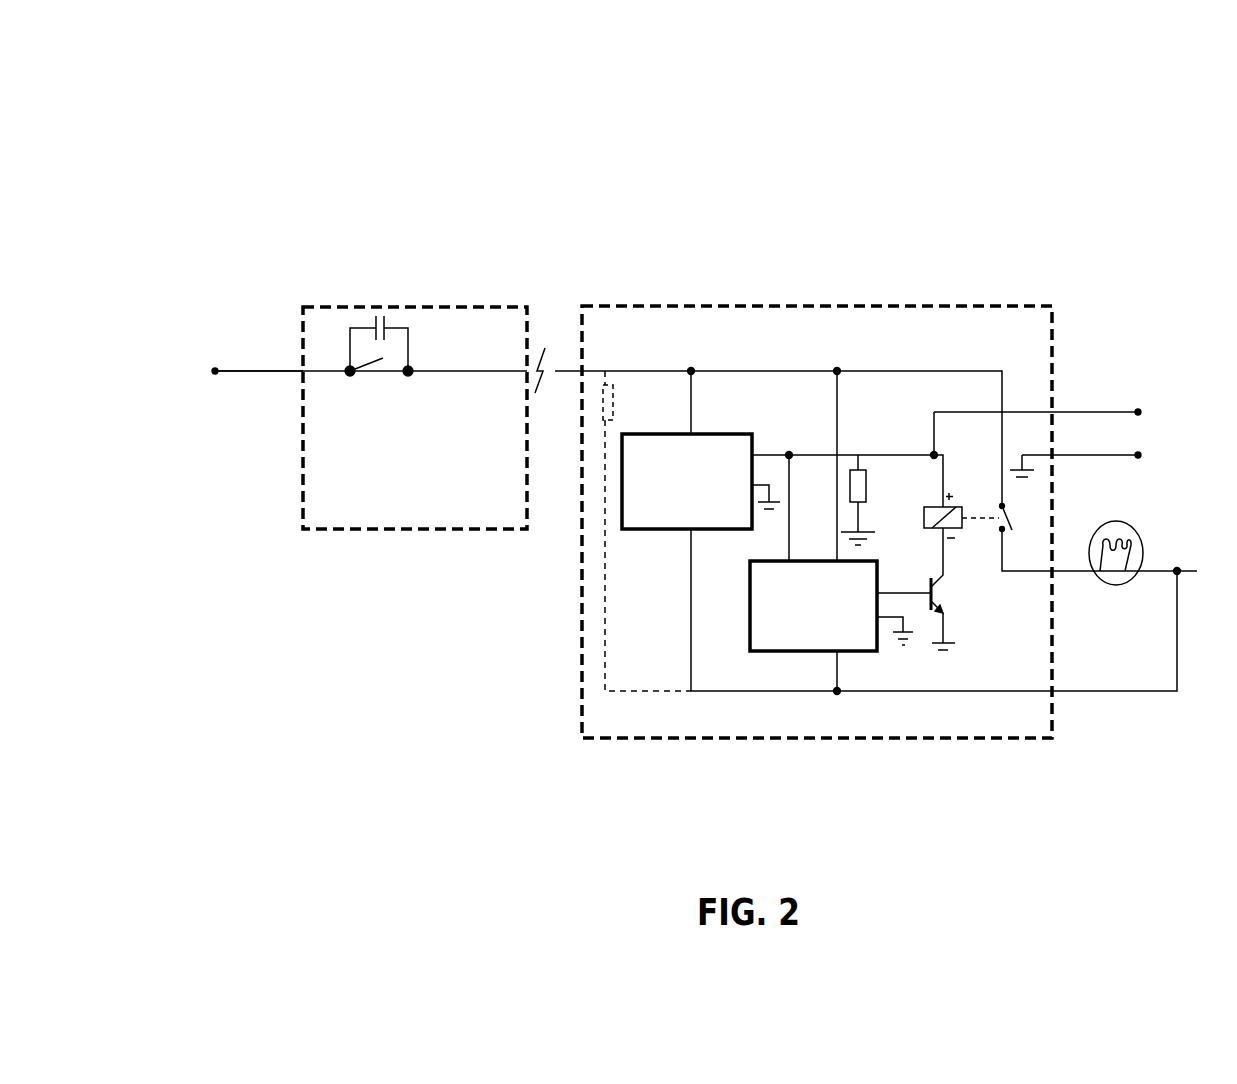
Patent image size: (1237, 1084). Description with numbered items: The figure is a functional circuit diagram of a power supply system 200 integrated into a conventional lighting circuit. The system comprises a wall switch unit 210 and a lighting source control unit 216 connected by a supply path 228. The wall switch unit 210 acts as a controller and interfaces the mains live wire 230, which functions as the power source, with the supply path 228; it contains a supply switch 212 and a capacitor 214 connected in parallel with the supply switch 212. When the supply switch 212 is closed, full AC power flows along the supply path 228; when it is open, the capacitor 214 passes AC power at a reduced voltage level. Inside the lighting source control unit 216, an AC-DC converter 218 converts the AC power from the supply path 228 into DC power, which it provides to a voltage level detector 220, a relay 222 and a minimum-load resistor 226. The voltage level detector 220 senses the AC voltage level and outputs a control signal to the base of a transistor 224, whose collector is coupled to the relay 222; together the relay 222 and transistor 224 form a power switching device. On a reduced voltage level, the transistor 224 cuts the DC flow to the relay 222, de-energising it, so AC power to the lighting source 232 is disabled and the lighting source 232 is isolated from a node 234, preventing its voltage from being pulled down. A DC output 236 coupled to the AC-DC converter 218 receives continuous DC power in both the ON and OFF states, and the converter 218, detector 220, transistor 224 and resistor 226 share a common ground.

The power supply system 200 is at (702, 182).
The wall switch unit 210 is at (353, 307).
The supply switch 212 is at (368, 376).
The capacitor 214 is at (388, 328).
The lighting source control unit 216 is at (817, 305).
The AC-DC converter 218 is at (622, 508).
The voltage level detector 220 is at (750, 628).
The relay 222 is at (953, 530).
The transistor 224 is at (930, 603).
The minimum-load resistor 226 is at (862, 485).
The supply path 228 is at (638, 370).
The live wire 230 is at (237, 371).
The lighting source 232 is at (1118, 586).
The node 234 is at (840, 369).
The DC output 236 is at (1158, 435).